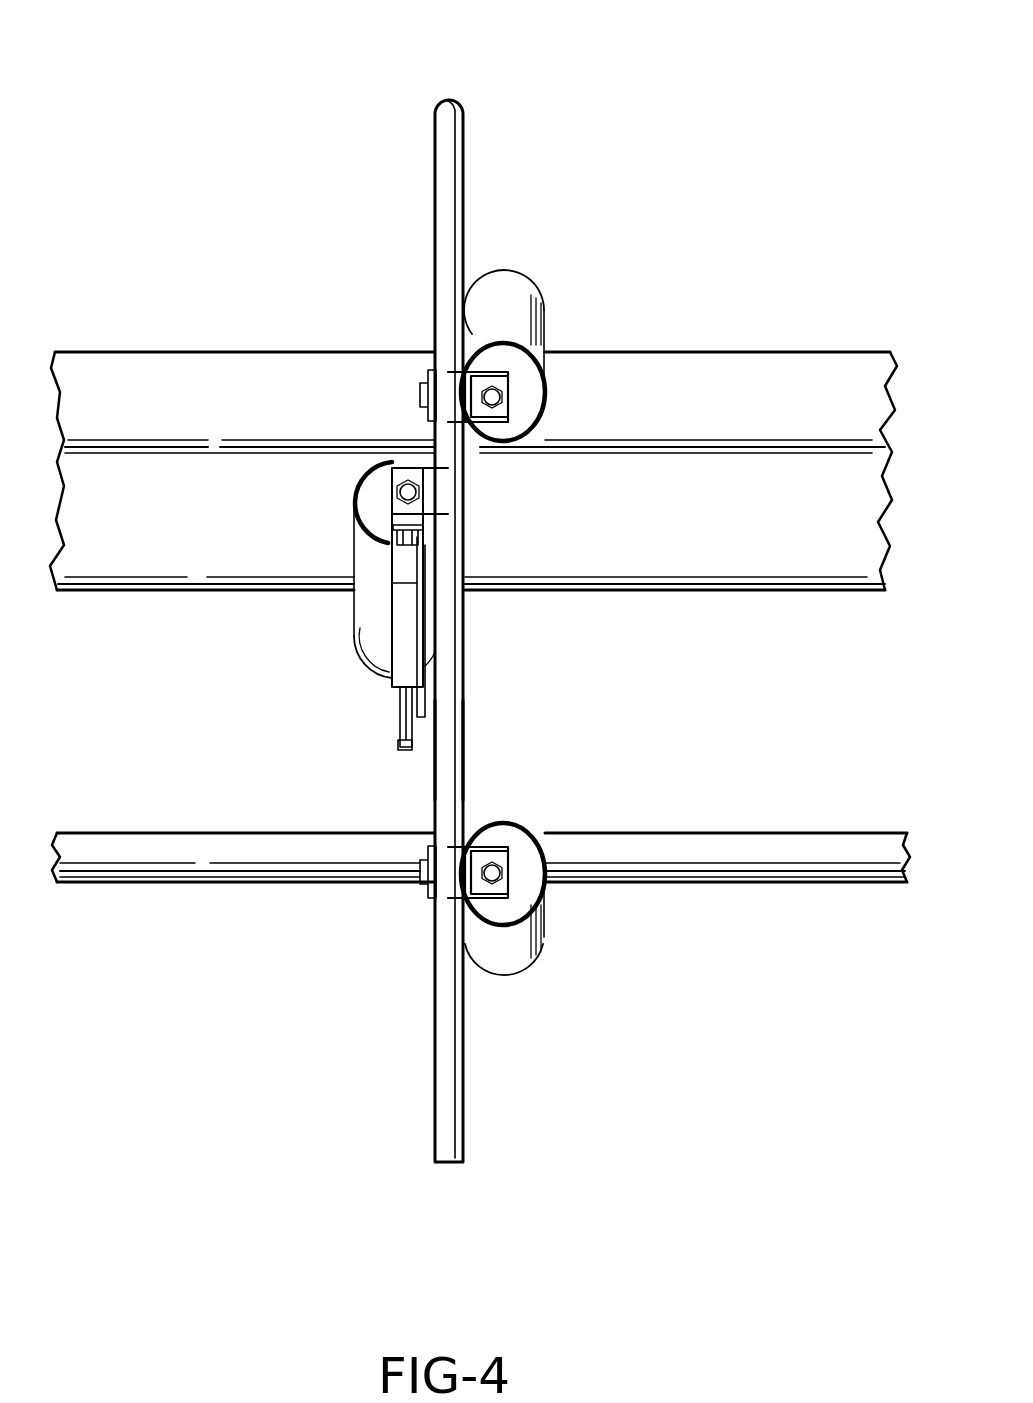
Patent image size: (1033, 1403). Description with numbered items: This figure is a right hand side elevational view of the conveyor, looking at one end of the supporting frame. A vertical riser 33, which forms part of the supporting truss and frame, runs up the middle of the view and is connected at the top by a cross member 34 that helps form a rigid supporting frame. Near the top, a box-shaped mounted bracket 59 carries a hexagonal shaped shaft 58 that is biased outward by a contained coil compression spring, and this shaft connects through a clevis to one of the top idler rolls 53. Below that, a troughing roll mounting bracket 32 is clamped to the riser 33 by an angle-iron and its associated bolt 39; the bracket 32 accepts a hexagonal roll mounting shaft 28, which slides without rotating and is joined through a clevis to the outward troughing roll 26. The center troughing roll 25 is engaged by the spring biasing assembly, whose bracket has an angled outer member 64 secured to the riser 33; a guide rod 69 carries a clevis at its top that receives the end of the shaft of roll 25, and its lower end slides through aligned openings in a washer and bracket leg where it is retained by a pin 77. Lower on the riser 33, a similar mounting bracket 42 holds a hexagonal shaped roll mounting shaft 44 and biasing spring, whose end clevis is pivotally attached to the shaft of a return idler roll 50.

The center troughing roll 25 is at (377, 653).
The outward troughing roll 26 is at (370, 550).
The hexagonal roll mounting shaft 28 is at (412, 492).
The troughing roll mounting bracket 32 is at (413, 467).
The vertical riser 33 is at (448, 745).
The cross member 34 is at (452, 100).
The bolt 39 is at (425, 538).
The mounting bracket 42 is at (485, 900).
The hexagonal shaped roll mounting shaft 44 is at (494, 873).
The idler roll 50 is at (503, 828).
The idler roll 53 is at (500, 290).
The hexagonal shaped shaft 58 is at (494, 397).
The box-shaped mounted bracket 59 is at (508, 372).
The angled outer member 64 is at (407, 637).
The guide rod 69 is at (405, 725).
The pin 77 is at (400, 748).